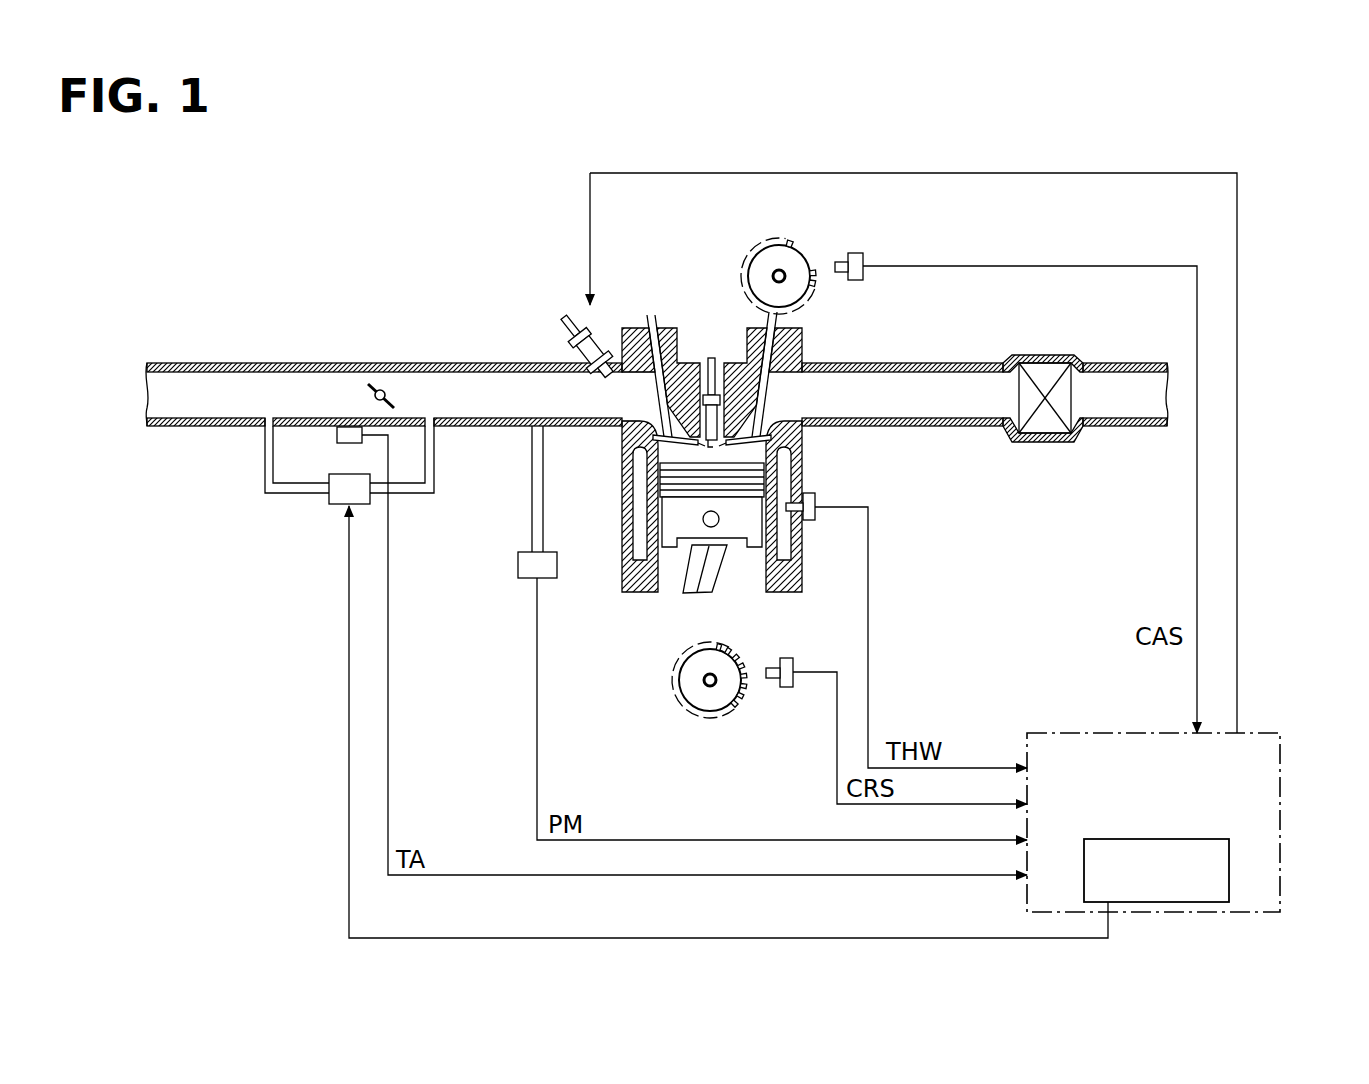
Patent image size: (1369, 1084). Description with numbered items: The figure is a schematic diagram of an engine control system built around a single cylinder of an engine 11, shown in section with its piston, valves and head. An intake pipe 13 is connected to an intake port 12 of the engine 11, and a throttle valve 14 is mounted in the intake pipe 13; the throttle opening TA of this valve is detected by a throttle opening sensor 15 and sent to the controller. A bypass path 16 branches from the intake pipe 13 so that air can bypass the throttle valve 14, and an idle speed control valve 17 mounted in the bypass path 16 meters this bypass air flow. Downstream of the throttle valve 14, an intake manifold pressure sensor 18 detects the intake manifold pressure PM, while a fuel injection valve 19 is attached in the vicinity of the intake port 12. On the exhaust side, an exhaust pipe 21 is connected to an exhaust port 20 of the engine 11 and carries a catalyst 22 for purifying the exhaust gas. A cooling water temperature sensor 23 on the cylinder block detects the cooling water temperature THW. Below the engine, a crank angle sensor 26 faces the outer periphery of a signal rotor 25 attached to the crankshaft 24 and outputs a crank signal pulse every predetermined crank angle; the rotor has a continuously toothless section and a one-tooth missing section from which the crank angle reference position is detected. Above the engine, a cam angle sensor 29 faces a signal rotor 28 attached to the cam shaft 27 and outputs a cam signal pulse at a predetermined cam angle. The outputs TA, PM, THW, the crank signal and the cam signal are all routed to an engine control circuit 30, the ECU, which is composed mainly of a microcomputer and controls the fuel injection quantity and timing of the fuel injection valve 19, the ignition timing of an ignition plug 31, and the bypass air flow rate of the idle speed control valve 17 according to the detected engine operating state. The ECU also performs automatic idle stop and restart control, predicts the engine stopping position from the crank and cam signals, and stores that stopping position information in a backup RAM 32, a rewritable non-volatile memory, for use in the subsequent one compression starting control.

The engine 11 is at (800, 325).
The intake port 12 is at (632, 397).
The intake pipe 13 is at (414, 363).
The throttle valve 14 is at (372, 385).
The throttle opening sensor 15 is at (337, 432).
The bypass path 16 is at (292, 494).
The idle speed control valve 17 is at (340, 505).
The intake manifold pressure sensor 18 is at (518, 560).
The fuel injection valve 19 is at (600, 345).
The exhaust port 20 is at (796, 400).
The exhaust pipe 21 is at (962, 363).
The catalyst 22 is at (1045, 378).
The cooling water temperature sensor 23 is at (818, 498).
The crankshaft 24 is at (704, 680).
The signal rotor 25 is at (744, 694).
The crank angle sensor 26 is at (790, 660).
The cam shaft 27 is at (773, 275).
The signal rotor 28 is at (818, 284).
The cam angle sensor 29 is at (862, 253).
The engine control circuit 30 is at (1075, 733).
The ignition plug 31 is at (711, 358).
The backup RAM 32 is at (1229, 868).